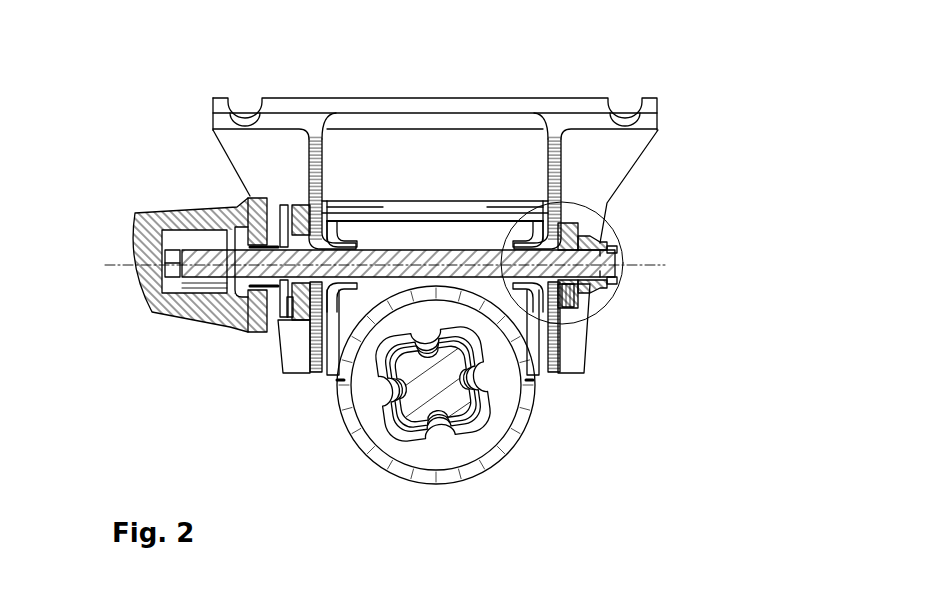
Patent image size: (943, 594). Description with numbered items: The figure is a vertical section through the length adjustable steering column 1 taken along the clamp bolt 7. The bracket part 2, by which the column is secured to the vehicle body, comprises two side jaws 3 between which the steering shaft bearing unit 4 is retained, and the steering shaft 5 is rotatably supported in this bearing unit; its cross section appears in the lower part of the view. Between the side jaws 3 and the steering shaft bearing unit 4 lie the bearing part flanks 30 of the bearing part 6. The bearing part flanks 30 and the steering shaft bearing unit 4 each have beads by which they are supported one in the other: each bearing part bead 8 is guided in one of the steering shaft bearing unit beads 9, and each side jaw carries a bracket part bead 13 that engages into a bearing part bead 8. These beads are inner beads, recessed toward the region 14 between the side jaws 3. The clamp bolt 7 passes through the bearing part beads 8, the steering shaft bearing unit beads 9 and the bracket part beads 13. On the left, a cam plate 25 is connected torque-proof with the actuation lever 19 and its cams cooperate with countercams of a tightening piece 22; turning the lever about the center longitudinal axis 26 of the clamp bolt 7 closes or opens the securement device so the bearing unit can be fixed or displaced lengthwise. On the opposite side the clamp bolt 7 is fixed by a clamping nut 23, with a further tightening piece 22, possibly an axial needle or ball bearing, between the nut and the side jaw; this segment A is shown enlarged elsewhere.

The steering column 1 is at (663, 176).
The bracket part 2 is at (557, 128).
The side jaws 3 is at (310, 167).
The steering shaft bearing unit 4 is at (349, 427).
The steering shaft 5 is at (490, 473).
The bearing part 6 is at (322, 235).
The clamp bolt 7 is at (262, 318).
The bearing part bead 8 is at (290, 372).
The steering shaft bearing unit bead 9 is at (517, 220).
The bracket part bead 13 is at (287, 322).
The region between the side jaws 14 is at (443, 180).
The actuation lever 19 is at (212, 315).
The tightening piece 22 is at (244, 203).
The clamping nut 23 is at (606, 240).
The cam plate 25 is at (175, 310).
The center longitudinal axis 26 is at (163, 262).
The bearing part flanks 30 is at (302, 385).
The segment A is at (626, 253).